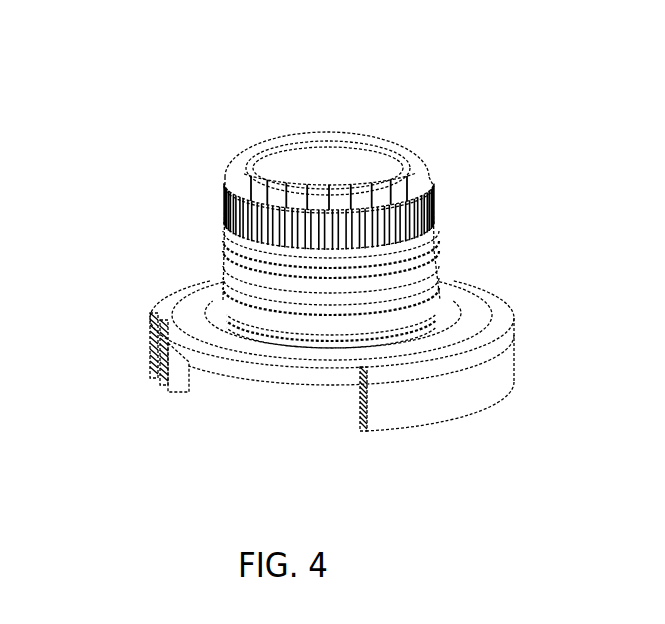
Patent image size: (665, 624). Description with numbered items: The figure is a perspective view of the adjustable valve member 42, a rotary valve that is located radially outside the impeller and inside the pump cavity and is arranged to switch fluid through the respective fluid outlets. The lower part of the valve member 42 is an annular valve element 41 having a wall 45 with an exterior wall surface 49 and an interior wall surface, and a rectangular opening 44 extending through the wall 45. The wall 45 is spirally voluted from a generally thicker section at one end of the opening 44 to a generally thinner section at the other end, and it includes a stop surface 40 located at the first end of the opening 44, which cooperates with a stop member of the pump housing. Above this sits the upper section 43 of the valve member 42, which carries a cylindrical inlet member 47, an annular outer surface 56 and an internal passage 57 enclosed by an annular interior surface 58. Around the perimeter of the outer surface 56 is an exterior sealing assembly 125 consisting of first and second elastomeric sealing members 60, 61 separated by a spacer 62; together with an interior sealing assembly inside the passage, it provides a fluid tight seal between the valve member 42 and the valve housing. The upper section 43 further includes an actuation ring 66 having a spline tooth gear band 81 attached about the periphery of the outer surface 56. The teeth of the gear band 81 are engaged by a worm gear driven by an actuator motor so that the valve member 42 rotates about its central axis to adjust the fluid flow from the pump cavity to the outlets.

The valve member 42 is at (571, 101).
The upper section 43 is at (440, 142).
The cylindrical inlet member 47 is at (366, 133).
The annular interior surface 58 is at (363, 160).
The internal passage 57 is at (312, 148).
The spline tooth gear band 81 is at (440, 193).
The exterior sealing assembly 125 is at (468, 244).
The actuation ring 66 is at (270, 253).
The first elastomeric sealing member 60 is at (268, 252).
The spacer 62 is at (256, 291).
The second elastomeric sealing member 61 is at (275, 300).
The rectangular opening 44 is at (283, 424).
The annular outer surface 56 is at (418, 311).
The annular valve element 41 is at (505, 310).
The exterior wall surface 49 is at (495, 373).
The wall 45 is at (402, 428).
The stop surface 40 is at (160, 367).